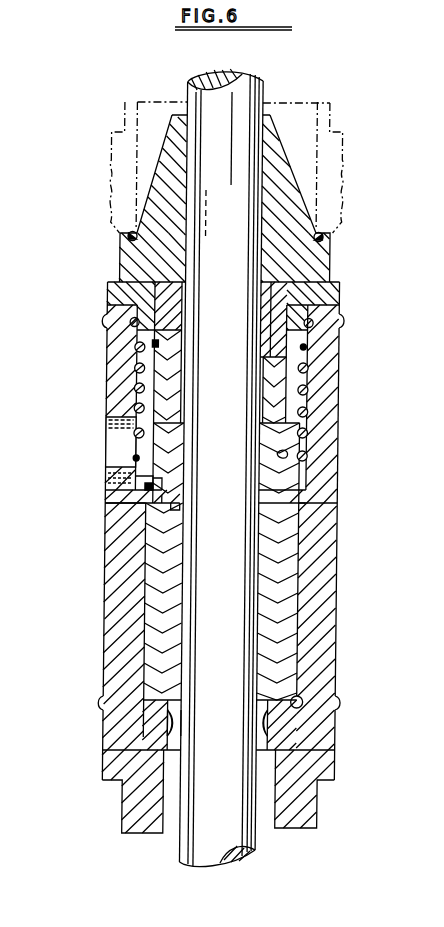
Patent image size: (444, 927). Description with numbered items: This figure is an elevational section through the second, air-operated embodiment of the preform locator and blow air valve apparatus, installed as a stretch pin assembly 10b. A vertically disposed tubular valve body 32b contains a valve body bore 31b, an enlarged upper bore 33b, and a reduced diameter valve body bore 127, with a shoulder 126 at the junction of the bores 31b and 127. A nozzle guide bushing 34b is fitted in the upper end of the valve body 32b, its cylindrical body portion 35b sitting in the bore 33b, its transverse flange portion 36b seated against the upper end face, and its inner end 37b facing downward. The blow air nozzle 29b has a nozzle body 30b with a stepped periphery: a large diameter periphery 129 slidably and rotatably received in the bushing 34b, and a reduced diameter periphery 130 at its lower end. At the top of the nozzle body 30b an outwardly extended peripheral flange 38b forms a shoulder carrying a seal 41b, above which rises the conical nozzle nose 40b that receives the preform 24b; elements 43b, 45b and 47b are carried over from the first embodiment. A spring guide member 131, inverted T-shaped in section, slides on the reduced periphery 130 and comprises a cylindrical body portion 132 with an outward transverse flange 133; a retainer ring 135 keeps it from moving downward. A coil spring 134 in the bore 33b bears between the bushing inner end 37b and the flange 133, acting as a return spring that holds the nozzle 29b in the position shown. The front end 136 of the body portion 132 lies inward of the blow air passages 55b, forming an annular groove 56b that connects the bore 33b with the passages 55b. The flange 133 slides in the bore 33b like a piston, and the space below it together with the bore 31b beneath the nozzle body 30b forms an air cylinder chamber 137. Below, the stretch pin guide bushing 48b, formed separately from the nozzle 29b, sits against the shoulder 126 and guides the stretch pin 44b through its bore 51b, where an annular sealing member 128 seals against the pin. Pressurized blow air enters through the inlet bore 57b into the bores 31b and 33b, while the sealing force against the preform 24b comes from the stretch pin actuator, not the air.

The stretch pin assembly 10b is at (155, 849).
The preform 24b is at (108, 162).
The blow air nozzle 29b is at (327, 194).
The blow air nozzle body 30b is at (337, 434).
The valve body bore 31b is at (340, 677).
The valve body 32b is at (113, 778).
The enlarged valve body bore 33b is at (337, 392).
The nozzle guide bushing 34b is at (353, 290).
The bushing body portion 35b is at (348, 324).
The bushing flange portion 36b is at (347, 298).
The bushing inner end 37b is at (344, 364).
The peripheral flange 38b is at (135, 261).
The conical nozzle nose 40b is at (306, 176).
The seal 41b is at (330, 233).
The nozzle element 43b is at (111, 343).
The stretch pin 44b is at (231, 864).
The nozzle element 45b is at (339, 506).
The stretch pin element 47b is at (266, 110).
The stretch pin guide bushing 48b is at (166, 581).
The guide bushing bore 51b is at (335, 637).
The blow air passages 55b is at (182, 360).
The annular groove 56b is at (169, 346).
The inlet bore 57b is at (115, 485).
The shoulder 126 is at (305, 741).
The reduced diameter valve body bore 127 is at (276, 830).
The annular sealing member 128 is at (175, 732).
The large diameter periphery 129 is at (283, 305).
The reduced diameter periphery 130 is at (291, 457).
The spring guide member 131 is at (132, 403).
The spring guide body portion 132 is at (132, 387).
The spring guide flange 133 is at (133, 483).
The coil spring 134 is at (132, 440).
The retainer ring 135 is at (115, 508).
The front end of spring guide body portion 136 is at (284, 358).
The air cylinder chamber 137 is at (105, 524).